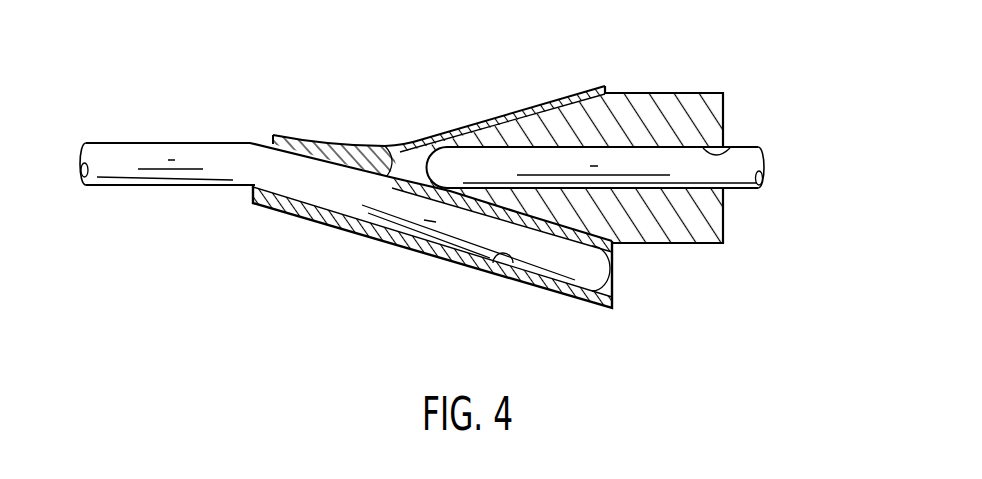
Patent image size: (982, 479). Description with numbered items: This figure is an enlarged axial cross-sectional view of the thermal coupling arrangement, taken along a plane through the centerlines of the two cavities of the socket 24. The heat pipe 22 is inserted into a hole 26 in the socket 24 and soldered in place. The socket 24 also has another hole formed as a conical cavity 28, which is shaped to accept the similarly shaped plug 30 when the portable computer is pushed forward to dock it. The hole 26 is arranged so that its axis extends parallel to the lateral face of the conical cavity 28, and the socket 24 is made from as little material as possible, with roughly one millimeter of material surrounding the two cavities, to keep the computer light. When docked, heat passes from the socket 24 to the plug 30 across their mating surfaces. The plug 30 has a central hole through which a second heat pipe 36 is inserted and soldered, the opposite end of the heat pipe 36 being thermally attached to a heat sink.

The heat pipe 22 is at (166, 143).
The socket 24 is at (405, 143).
The hole 26 is at (517, 280).
The conical cavity 28 is at (728, 152).
The plug 30 is at (667, 92).
The second heat pipe 36 is at (748, 190).